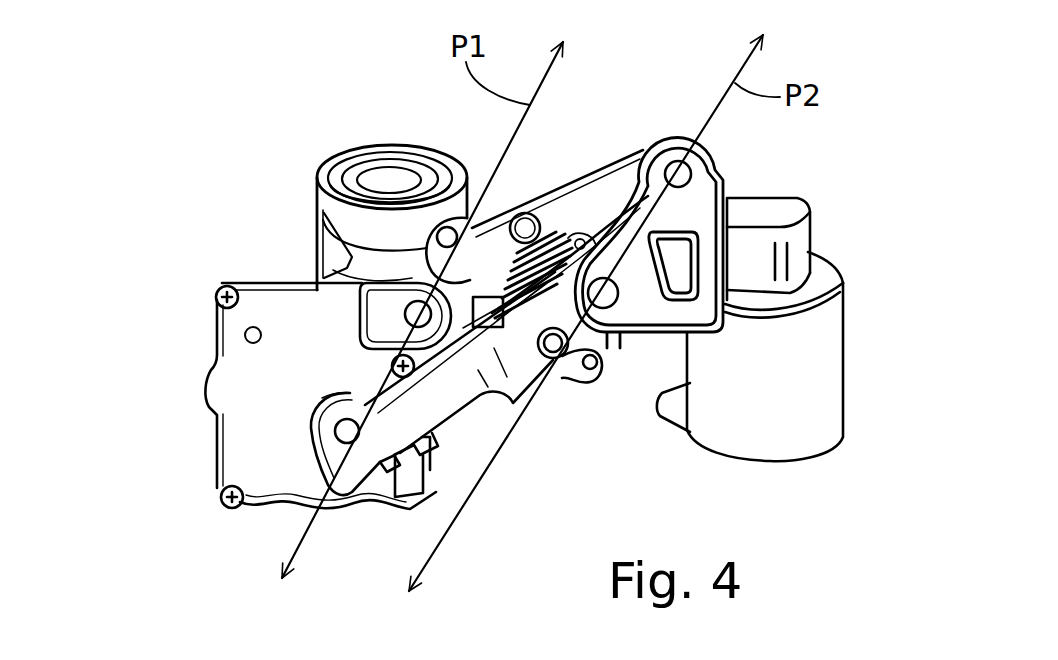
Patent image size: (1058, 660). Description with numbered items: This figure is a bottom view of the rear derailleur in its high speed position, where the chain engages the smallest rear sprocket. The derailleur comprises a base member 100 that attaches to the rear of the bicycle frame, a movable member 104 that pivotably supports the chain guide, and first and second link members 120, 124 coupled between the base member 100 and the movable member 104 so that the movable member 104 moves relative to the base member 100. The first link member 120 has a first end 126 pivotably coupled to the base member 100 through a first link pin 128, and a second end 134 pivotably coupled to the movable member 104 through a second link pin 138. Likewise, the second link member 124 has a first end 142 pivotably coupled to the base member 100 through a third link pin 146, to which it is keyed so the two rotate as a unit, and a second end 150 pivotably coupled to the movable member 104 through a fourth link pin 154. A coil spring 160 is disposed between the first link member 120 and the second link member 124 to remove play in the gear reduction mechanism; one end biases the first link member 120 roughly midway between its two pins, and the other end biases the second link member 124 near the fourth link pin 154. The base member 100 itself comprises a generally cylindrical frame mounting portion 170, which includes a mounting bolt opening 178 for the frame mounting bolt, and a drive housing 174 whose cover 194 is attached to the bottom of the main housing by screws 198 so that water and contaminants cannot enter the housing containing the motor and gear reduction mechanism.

The base member 100 is at (152, 375).
The movable member 104 is at (828, 318).
The first link member 120 is at (601, 162).
The second link member 124 is at (467, 452).
The first end 126 is at (420, 256).
The first link pin 128 is at (405, 305).
The second end 134 is at (641, 148).
The second link pin 138 is at (712, 172).
The first end 142 is at (326, 403).
The third link pin 146 is at (348, 433).
The second end 150 is at (585, 386).
The fourth link pin 154 is at (614, 302).
The spring 160 is at (552, 215).
The frame mounting portion 170 is at (316, 200).
The drive housing 174 is at (214, 453).
The mounting bolt opening 178 is at (378, 187).
The cover 194 is at (292, 474).
The screws 198 is at (216, 300).